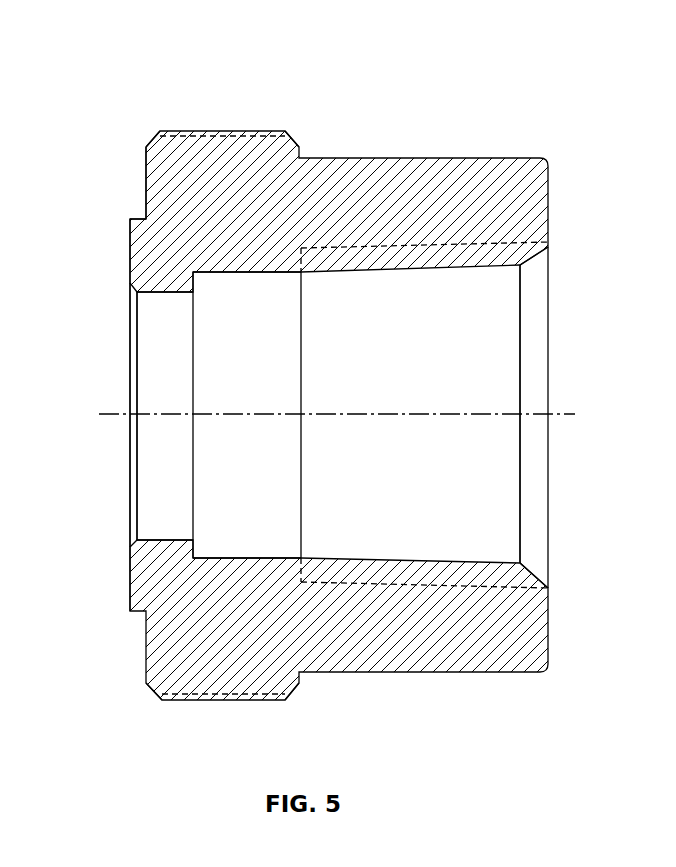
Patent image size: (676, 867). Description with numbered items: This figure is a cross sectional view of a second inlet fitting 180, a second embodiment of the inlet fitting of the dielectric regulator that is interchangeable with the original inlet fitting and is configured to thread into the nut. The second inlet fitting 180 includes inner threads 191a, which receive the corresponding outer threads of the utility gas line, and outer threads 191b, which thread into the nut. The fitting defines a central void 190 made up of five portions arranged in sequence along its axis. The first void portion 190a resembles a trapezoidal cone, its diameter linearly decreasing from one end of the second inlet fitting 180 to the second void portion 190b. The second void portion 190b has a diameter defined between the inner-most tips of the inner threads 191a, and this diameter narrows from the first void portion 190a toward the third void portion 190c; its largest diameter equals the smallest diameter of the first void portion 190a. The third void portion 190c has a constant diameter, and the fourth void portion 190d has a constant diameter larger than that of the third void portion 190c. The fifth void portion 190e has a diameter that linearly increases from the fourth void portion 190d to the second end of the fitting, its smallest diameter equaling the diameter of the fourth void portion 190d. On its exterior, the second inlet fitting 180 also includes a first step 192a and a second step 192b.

The second inlet fitting 180 is at (498, 110).
The central void 190 is at (368, 294).
The first void portion 190a is at (528, 325).
The second void portion 190b is at (424, 415).
The third void portion 190c is at (247, 415).
The fourth void portion 190d is at (165, 416).
The fifth void portion 190e is at (133, 332).
The inner threads 191a is at (467, 562).
The outer threads 191b is at (220, 700).
The first step 192a is at (301, 151).
The second step 192b is at (140, 219).